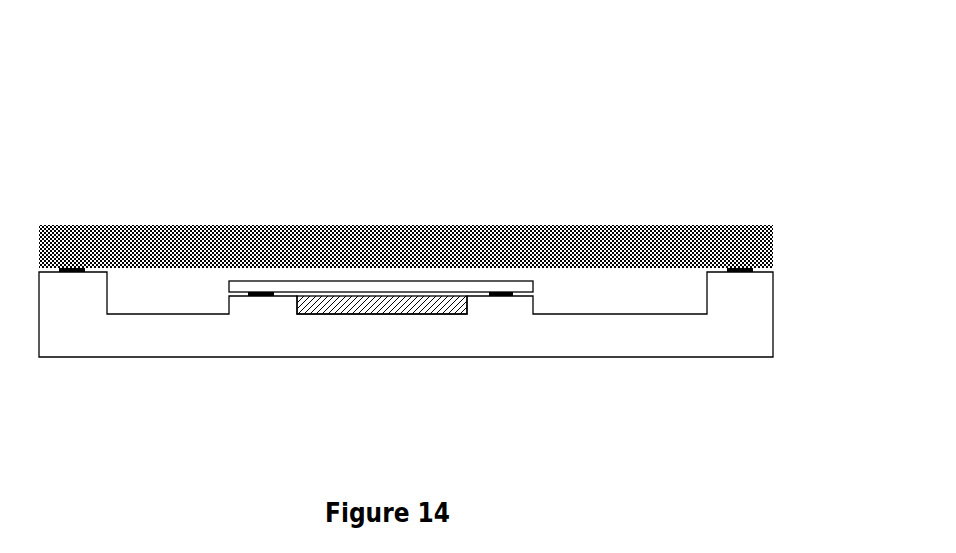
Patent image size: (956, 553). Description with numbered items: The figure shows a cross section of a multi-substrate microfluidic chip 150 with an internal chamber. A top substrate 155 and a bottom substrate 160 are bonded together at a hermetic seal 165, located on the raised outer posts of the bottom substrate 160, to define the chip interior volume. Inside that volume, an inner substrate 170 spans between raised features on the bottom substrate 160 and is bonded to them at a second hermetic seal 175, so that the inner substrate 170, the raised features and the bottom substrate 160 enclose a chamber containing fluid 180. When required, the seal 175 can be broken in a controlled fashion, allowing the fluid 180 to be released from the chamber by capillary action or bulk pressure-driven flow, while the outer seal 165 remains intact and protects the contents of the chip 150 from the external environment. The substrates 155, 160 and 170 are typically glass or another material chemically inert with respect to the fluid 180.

The microfluidic chip 150 is at (196, 106).
The top substrate 155 is at (682, 237).
The bottom substrate 160 is at (73, 340).
The hermetic seal 165 is at (65, 268).
The inner substrate 170 is at (480, 282).
The hermetic seal 175 is at (500, 296).
The fluid 180 is at (332, 315).